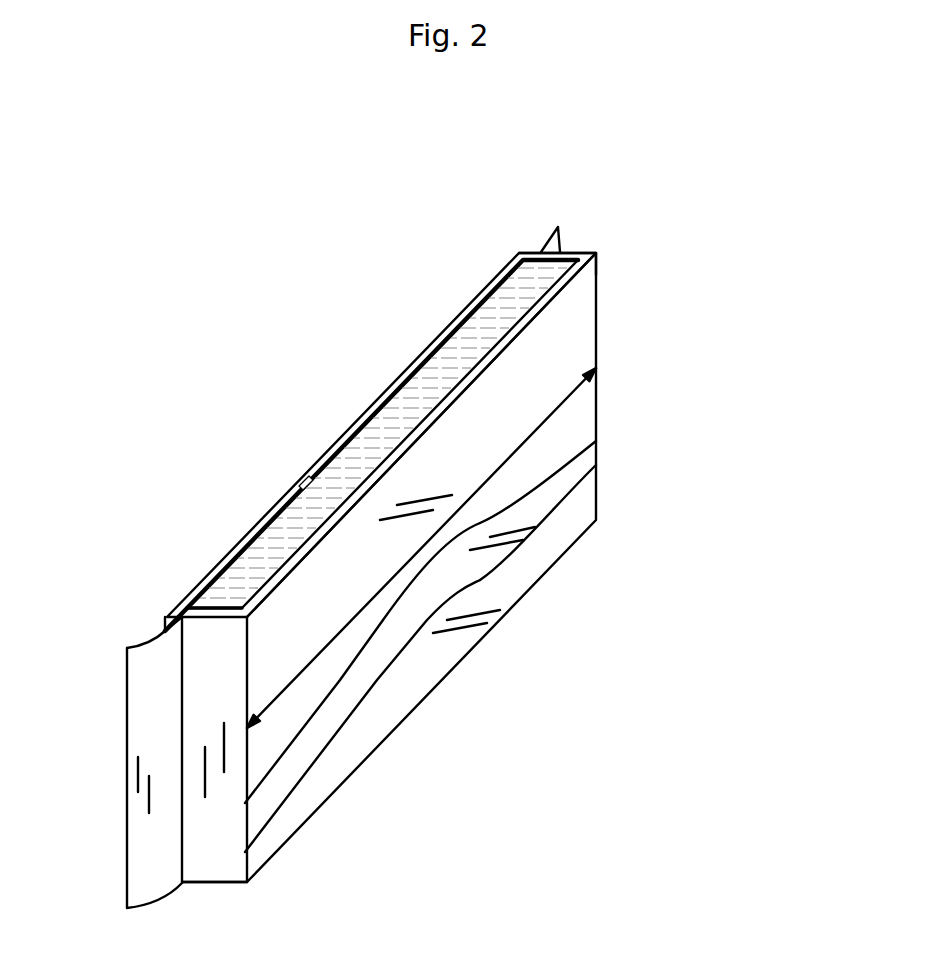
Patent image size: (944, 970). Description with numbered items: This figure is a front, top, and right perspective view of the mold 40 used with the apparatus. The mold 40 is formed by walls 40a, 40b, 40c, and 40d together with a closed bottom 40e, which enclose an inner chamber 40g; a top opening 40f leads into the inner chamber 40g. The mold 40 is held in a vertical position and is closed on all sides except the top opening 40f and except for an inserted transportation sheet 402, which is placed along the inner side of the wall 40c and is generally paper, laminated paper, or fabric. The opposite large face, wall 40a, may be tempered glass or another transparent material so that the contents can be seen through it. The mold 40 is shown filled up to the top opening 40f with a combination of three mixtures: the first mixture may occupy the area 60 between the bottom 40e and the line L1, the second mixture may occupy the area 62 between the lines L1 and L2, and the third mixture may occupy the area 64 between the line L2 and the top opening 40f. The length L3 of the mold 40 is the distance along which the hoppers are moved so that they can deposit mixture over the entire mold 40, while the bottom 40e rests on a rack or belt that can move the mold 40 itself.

The mold 40 is at (153, 687).
The wall 40a is at (578, 338).
The wall 40b is at (223, 857).
The wall 40c is at (278, 512).
The wall 40d is at (583, 252).
The closed bottom 40e is at (205, 881).
The top opening 40f is at (343, 475).
The inner chamber 40g is at (450, 378).
The transportation sheet 402 is at (560, 248).
The area 60 is at (415, 683).
The area 62 is at (343, 705).
The area 64 is at (515, 478).
The line L1 is at (477, 582).
The line L2 is at (300, 742).
The length L3 is at (525, 445).